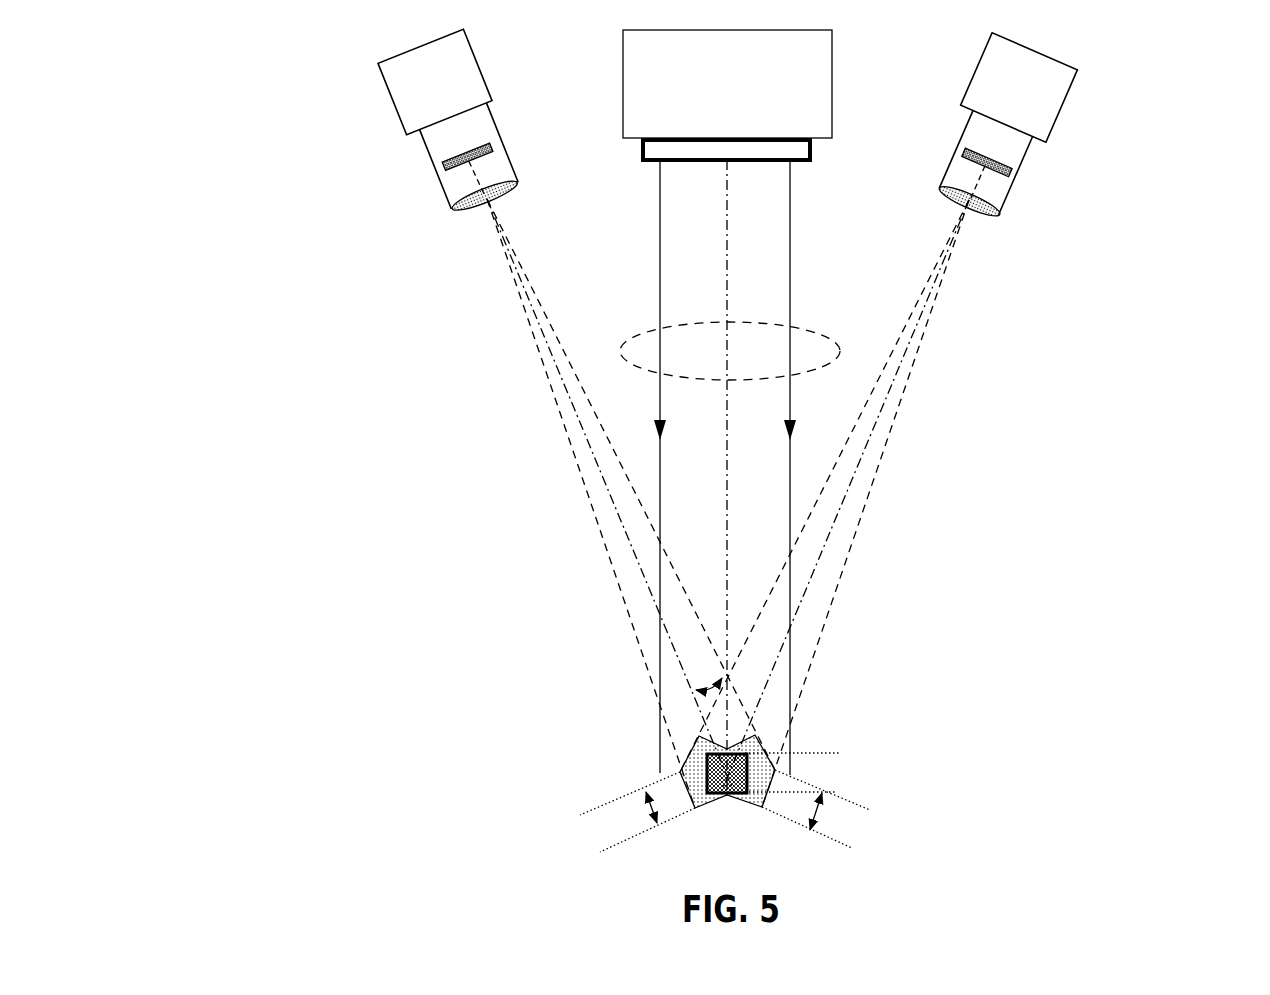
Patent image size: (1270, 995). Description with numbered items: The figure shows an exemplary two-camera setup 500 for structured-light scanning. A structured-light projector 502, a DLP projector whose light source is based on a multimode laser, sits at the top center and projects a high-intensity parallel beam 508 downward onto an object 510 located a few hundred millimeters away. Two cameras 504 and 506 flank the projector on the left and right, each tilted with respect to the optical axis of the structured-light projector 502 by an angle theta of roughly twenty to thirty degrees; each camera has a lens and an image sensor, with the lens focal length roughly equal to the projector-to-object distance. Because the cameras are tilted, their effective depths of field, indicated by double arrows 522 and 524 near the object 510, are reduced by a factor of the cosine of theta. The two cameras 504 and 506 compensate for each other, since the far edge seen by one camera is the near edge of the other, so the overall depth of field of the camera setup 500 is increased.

The camera setup 500 is at (132, 282).
The structured-light projector 502 is at (833, 85).
The camera 504 is at (495, 412).
The camera 506 is at (962, 405).
The parallel beam 508 is at (837, 347).
The object 510 is at (727, 797).
The double arrow 522 is at (643, 810).
The double arrow 524 is at (813, 808).